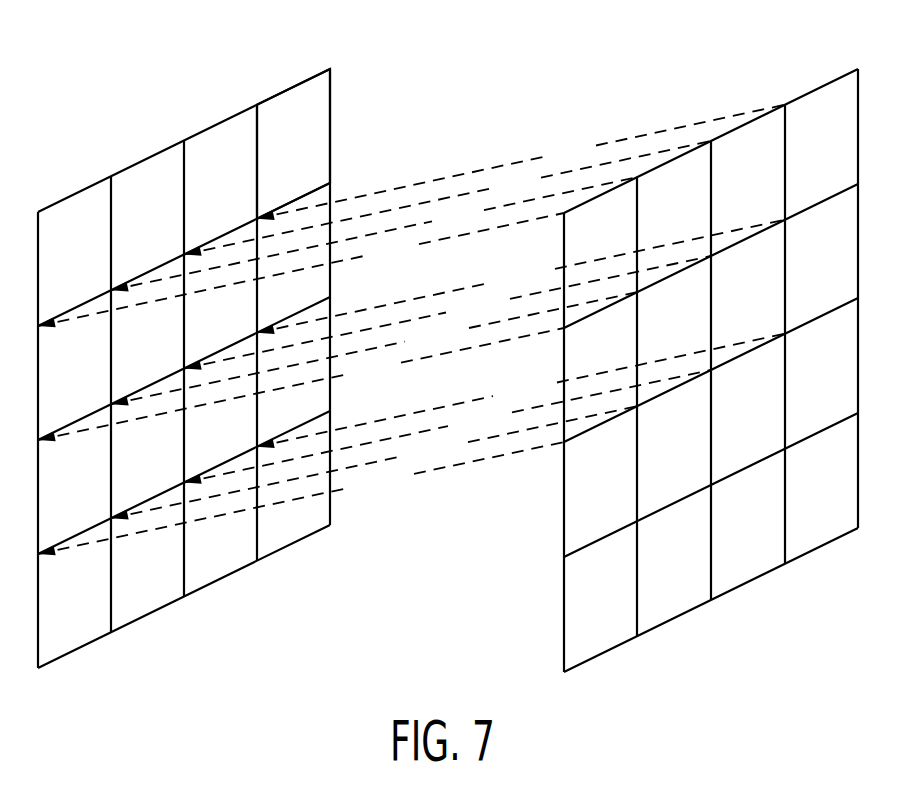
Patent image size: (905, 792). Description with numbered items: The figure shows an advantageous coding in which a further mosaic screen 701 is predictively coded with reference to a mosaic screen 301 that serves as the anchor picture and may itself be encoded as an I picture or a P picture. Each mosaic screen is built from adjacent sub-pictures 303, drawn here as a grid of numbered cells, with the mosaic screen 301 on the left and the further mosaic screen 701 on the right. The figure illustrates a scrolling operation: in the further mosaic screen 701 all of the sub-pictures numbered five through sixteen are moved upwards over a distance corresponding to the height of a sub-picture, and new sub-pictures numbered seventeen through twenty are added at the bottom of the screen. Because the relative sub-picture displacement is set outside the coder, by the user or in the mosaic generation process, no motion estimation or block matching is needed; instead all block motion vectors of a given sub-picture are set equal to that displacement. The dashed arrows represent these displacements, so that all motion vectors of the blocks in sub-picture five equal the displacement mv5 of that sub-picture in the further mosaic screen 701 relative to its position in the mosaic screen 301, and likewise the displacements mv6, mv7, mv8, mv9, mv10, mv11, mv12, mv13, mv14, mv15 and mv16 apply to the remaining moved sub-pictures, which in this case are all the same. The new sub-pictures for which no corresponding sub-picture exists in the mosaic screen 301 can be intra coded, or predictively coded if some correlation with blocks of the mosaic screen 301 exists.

The mosaic screen 301 is at (111, 177).
The sub-picture 303 is at (298, 100).
The further mosaic screen 701 is at (637, 173).
The displacement of sub-picture 5 mv5 is at (301, 269).
The displacement of sub-picture 6 mv6 is at (374, 233).
The displacement of sub-picture 7 mv7 is at (447, 198).
The displacement of sub-picture 8 mv8 is at (521, 162).
The displacement of sub-picture 9 mv9 is at (301, 384).
The displacement of sub-picture 10 mv10 is at (374, 348).
The displacement of sub-picture 11 mv11 is at (447, 312).
The displacement of sub-picture 12 mv12 is at (521, 276).
The displacement of sub-picture 13 mv13 is at (301, 498).
The displacement of sub-picture 14 mv14 is at (374, 462).
The displacement of sub-picture 15 mv15 is at (447, 426).
The displacement of sub-picture 16 mv16 is at (521, 390).